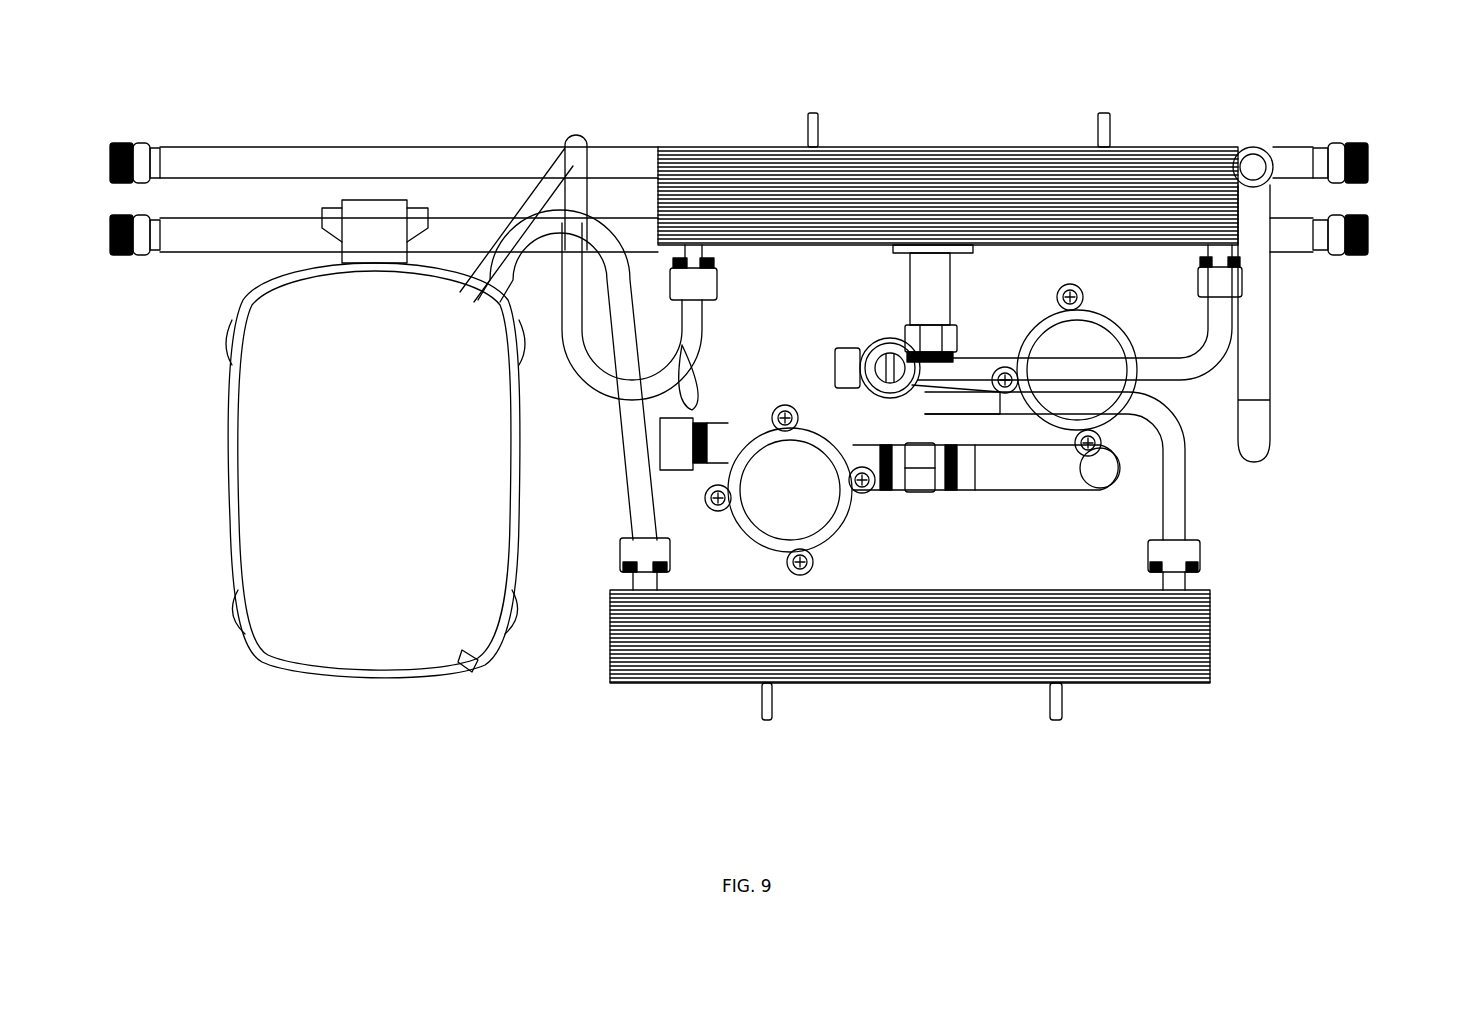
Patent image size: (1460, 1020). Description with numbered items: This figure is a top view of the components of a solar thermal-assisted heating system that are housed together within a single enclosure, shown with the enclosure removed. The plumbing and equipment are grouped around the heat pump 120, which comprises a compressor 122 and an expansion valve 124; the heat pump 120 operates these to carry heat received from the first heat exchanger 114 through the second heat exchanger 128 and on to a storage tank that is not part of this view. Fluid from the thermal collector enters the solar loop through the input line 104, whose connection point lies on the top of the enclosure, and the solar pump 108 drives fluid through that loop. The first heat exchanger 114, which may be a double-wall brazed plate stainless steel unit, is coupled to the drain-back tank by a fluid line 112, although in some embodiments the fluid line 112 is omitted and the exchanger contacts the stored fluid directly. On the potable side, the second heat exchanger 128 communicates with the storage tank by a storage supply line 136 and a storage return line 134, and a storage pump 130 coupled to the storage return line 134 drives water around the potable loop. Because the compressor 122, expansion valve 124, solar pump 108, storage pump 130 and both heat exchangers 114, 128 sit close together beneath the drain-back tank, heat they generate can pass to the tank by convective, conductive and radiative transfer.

The input line 104 is at (1272, 395).
The solar pump 108 is at (763, 546).
The fluid line 112 is at (1048, 492).
The first heat exchanger 114 is at (885, 685).
The heat pump 120 is at (575, 135).
The compressor 122 is at (258, 643).
The expansion valve 124 is at (868, 345).
The second heat exchanger 128 is at (920, 160).
The storage pump 130 is at (1128, 332).
The storage return line 134 is at (213, 252).
The storage supply line 136 is at (352, 145).